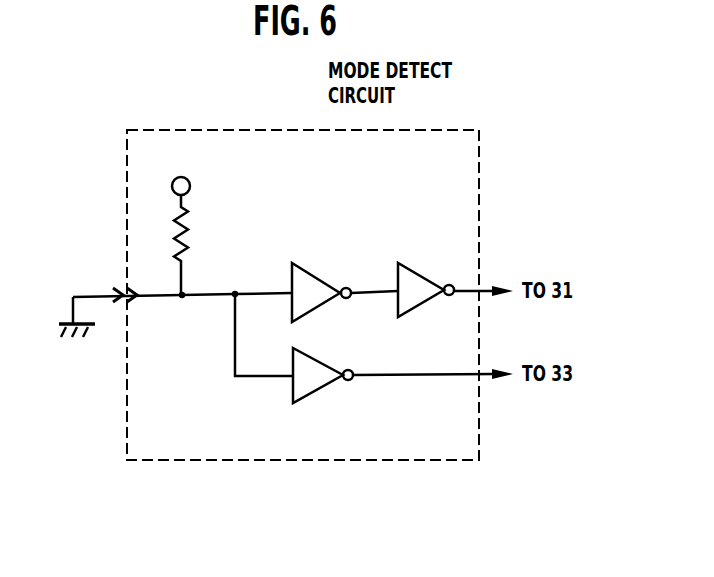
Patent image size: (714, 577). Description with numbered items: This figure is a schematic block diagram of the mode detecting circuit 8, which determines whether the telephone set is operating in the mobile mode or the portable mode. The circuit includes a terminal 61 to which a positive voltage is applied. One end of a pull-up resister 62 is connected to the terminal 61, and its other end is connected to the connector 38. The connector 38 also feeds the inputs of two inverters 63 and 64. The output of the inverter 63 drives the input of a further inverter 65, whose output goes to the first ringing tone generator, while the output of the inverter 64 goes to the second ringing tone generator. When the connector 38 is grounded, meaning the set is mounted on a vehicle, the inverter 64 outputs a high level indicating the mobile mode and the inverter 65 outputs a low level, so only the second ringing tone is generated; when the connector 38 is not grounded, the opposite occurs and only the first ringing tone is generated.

The mode detecting circuit 8 is at (292, 129).
The connector 38 is at (120, 293).
The terminal 61 is at (190, 185).
The pull-up resister 62 is at (187, 229).
The inverter 63 is at (322, 281).
The inverter 64 is at (325, 366).
The inverter 65 is at (425, 279).